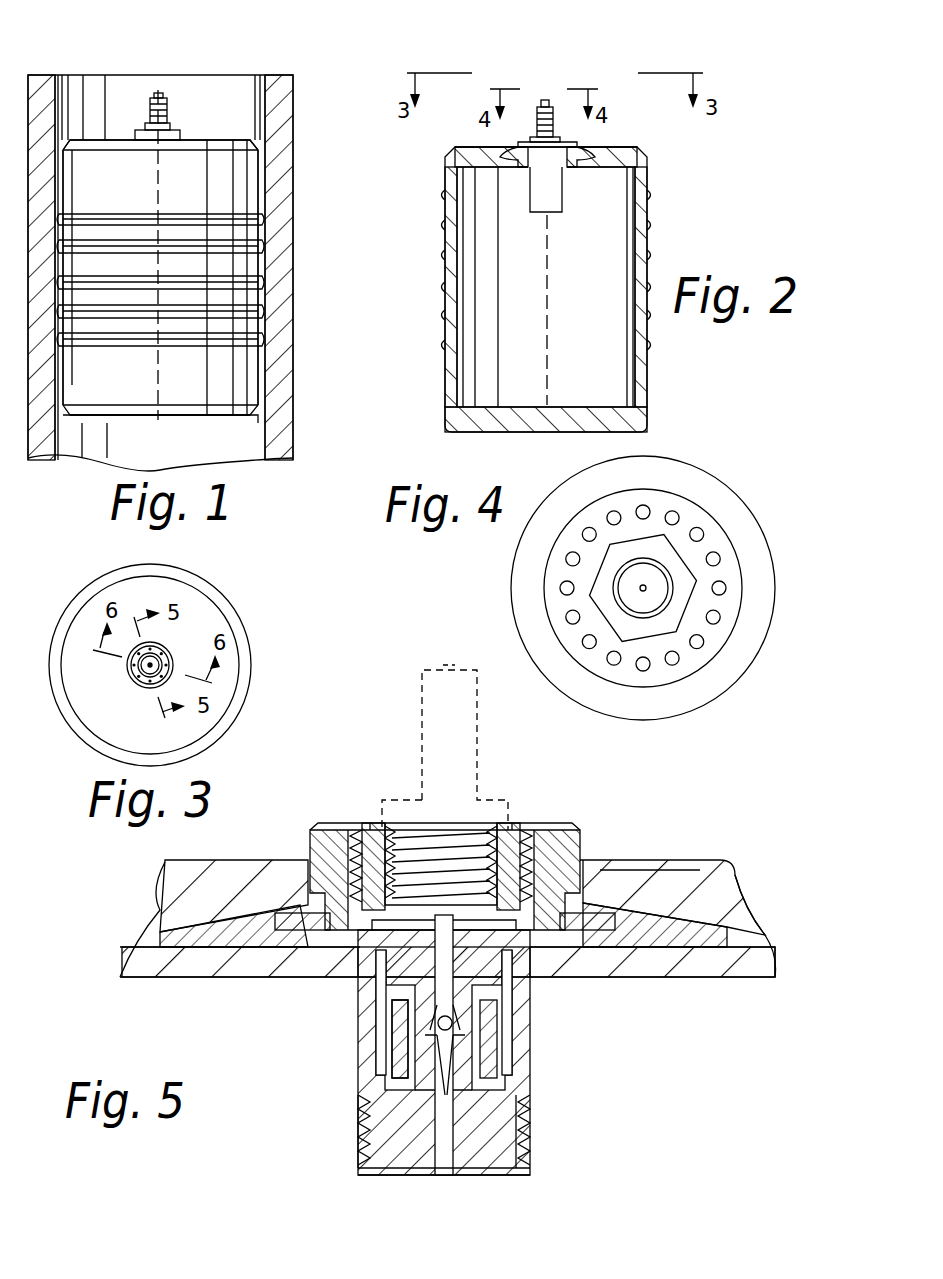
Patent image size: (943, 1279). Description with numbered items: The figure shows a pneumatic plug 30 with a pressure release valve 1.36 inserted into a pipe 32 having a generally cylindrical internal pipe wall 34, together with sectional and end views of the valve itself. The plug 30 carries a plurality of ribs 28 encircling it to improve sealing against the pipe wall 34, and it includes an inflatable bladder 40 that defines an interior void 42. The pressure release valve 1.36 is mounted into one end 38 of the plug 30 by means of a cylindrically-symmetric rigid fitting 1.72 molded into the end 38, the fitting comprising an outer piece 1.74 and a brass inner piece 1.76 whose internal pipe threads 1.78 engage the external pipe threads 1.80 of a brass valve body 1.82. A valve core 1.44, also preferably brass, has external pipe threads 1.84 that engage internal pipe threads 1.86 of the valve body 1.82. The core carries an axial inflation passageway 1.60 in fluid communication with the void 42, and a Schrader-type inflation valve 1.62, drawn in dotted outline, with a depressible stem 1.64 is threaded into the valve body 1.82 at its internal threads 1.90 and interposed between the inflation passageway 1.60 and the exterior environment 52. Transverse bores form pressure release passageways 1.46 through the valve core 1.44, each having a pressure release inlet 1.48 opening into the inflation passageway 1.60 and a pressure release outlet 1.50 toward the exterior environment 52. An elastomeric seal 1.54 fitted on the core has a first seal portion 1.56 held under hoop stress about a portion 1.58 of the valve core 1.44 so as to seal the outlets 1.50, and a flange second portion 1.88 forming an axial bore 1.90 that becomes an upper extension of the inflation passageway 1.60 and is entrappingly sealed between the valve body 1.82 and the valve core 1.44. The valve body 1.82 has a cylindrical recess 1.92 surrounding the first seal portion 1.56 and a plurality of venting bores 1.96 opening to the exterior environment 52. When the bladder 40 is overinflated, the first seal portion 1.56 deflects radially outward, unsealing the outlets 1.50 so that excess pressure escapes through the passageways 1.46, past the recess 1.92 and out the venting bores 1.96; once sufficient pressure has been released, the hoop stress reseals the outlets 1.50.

In FIG. 1, the ribs 28 is at (266, 285).
In FIG. 1, the plug 30 is at (178, 394).
In FIG. 2, the plug 30 is at (648, 393).
In FIG. 3, the plug 30 is at (205, 612).
In FIG. 1, the pipe 32 is at (283, 204).
In FIG. 1, the internal pipe wall 34 is at (262, 436).
In FIG. 1, the end of the plug 38 is at (115, 136).
In FIG. 2, the end of the plug 38 is at (635, 148).
In FIG. 5, the end of the plug 38 is at (670, 875).
In FIG. 1, the inflatable bladder 40 is at (226, 370).
In FIG. 2, the inflatable bladder 40 is at (645, 328).
In FIG. 5, the inflatable bladder 40 is at (728, 962).
In FIG. 2, the interior void 42 is at (615, 240).
In FIG. 5, the interior void 42 is at (454, 1219).
In FIG. 1, the exterior environment 52 is at (135, 108).
In FIG. 2, the exterior environment 52 is at (659, 113).
In FIG. 5, the exterior environment 52 is at (590, 797).
In FIG. 1, the pressure release valve 1.36 is at (185, 118).
In FIG. 2, the pressure release valve 1.36 is at (522, 193).
In FIG. 4, the pressure release valve 1.36 is at (704, 490).
In FIG. 5, the pressure release valve 1.36 is at (560, 1038).
In FIG. 5, the valve core 1.44 is at (498, 1160).
In FIG. 5, the pressure release passageways 1.46 is at (400, 1044).
In FIG. 5, the pressure release inlet 1.48 is at (372, 1118).
In FIG. 5, the pressure release outlet 1.50 is at (388, 1010).
In FIG. 5, the elastomeric seal 1.54 is at (400, 1068).
In FIG. 5, the first seal portion 1.56 is at (490, 1080).
In FIG. 5, the portion of the valve core 1.58 is at (510, 1128).
In FIG. 5, the inflation passageway 1.60 is at (442, 1132).
In FIG. 1, the inflation valve 1.62 is at (167, 122).
In FIG. 2, the inflation valve 1.62 is at (537, 110).
In FIG. 5, the inflation valve 1.62 is at (477, 727).
In FIG. 1, the depressible stem 1.64 is at (158, 93).
In FIG. 2, the depressible stem 1.64 is at (546, 100).
In FIG. 4, the depressible stem 1.64 is at (643, 588).
In FIG. 5, the depressible stem 1.64 is at (448, 665).
In FIG. 5, the rigid fitting 1.72 is at (685, 906).
In FIG. 5, the outer piece 1.74 is at (712, 958).
In FIG. 5, the inner piece 1.76 is at (592, 910).
In FIG. 5, the internal pipe threads 1.78 is at (573, 957).
In FIG. 5, the external pipe threads 1.80 is at (545, 830).
In FIG. 4, the valve body 1.82 is at (693, 660).
In FIG. 5, the valve body 1.82 is at (373, 983).
In FIG. 5, the external pipe threads of valve core 1.84 is at (518, 1150).
In FIG. 5, the internal pipe threads of valve body 1.86 is at (372, 1171).
In FIG. 5, the flange second portion 1.88 is at (478, 830).
In FIG. 5, the axial bore 1.90 is at (450, 865).
In FIG. 5, the cylindrical recess 1.92 is at (452, 1024).
In FIG. 4, the venting bores 1.96 is at (719, 588).
In FIG. 5, the venting bores 1.96 is at (368, 830).